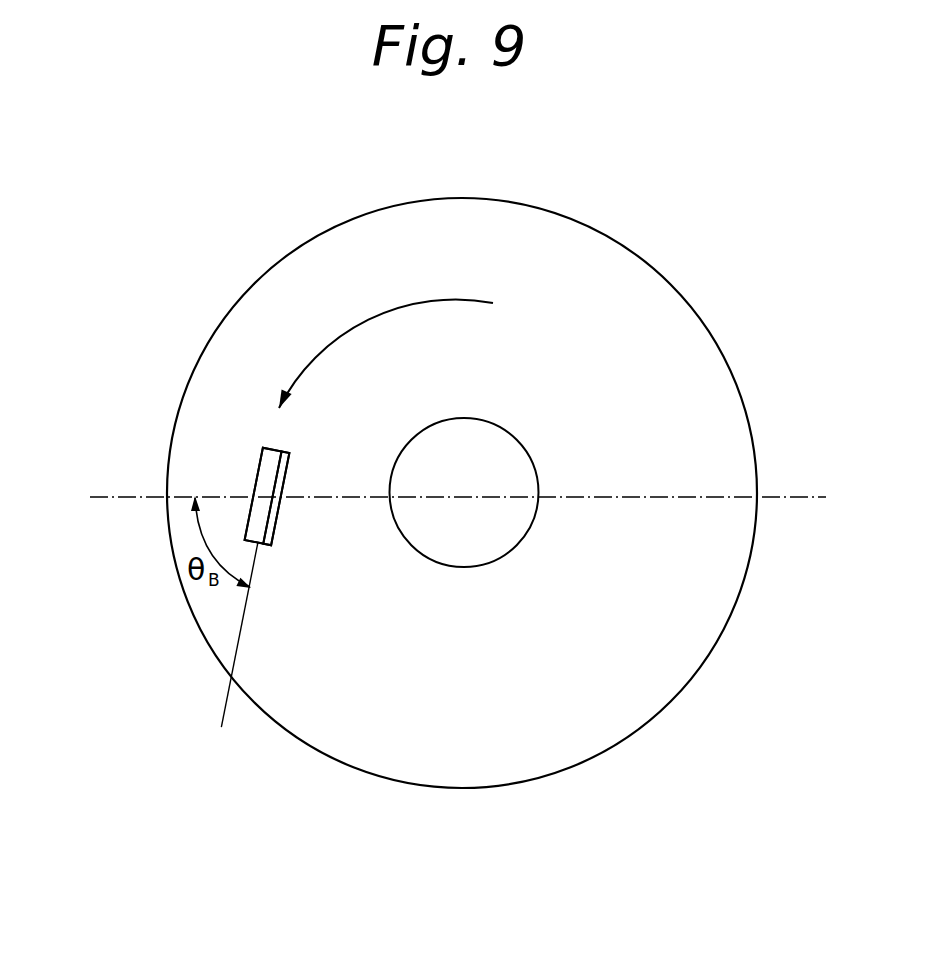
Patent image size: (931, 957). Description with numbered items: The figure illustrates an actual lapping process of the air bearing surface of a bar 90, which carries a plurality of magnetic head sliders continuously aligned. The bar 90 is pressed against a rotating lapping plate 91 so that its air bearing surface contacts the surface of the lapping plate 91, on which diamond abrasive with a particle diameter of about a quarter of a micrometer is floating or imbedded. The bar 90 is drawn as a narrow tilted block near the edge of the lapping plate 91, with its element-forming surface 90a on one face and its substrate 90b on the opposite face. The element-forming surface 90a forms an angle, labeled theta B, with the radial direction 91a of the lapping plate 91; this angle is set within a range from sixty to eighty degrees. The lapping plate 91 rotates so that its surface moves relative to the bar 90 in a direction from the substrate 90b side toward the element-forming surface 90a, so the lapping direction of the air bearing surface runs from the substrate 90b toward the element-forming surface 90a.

The bar 90 is at (265, 468).
The element-forming surface 90a is at (288, 476).
The substrate 90b is at (267, 494).
The lapping plate 91 is at (568, 743).
The radial direction 91a is at (128, 496).